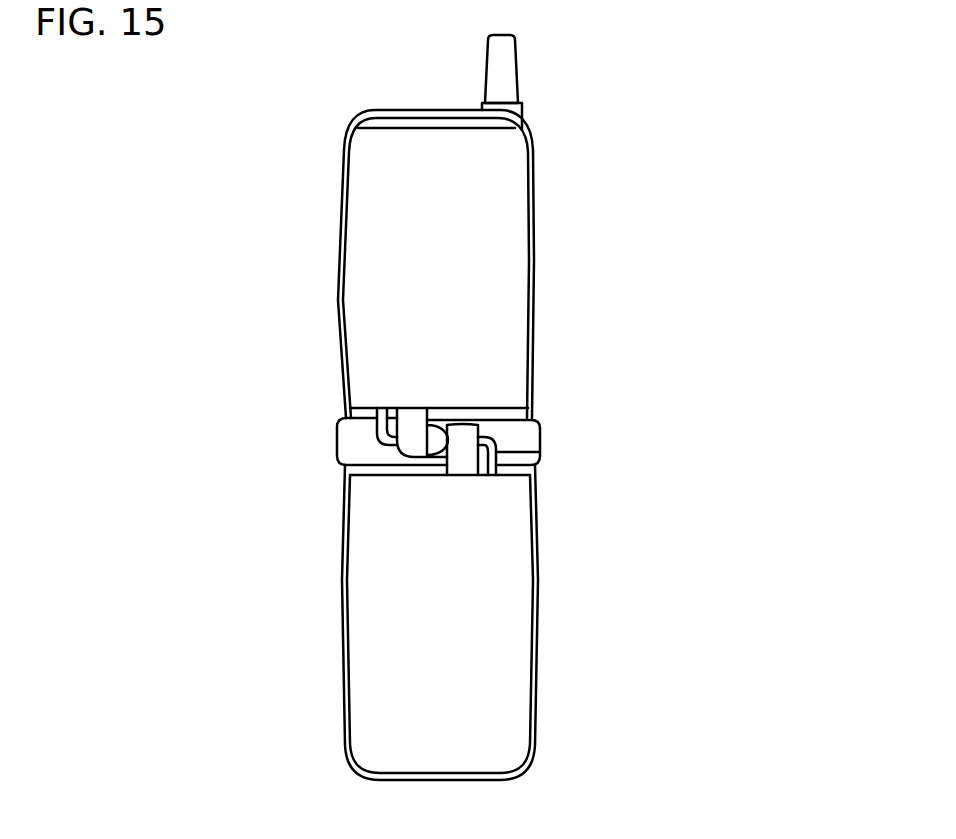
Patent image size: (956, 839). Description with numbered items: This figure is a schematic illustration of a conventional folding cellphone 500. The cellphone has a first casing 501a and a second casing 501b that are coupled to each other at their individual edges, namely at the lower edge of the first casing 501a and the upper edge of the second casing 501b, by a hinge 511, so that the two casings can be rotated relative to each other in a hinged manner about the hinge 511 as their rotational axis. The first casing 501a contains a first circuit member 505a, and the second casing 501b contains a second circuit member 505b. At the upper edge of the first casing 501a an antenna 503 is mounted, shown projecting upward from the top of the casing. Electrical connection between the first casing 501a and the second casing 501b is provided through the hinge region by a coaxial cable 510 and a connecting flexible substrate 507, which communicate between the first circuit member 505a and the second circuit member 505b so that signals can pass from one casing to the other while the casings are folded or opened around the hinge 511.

The folding cellphone 500 is at (701, 110).
The first casing 501a is at (537, 190).
The second casing 501b is at (538, 580).
The antenna 503 is at (520, 68).
The first circuit member 505a is at (363, 296).
The second circuit member 505b is at (368, 655).
The connecting flexible substrate 507 is at (473, 433).
The coaxial cable 510 is at (540, 452).
The hinge 511 is at (337, 445).